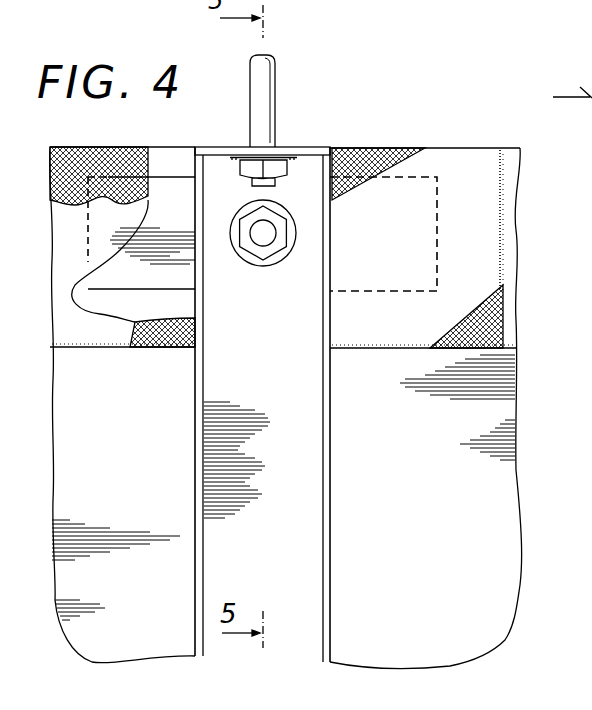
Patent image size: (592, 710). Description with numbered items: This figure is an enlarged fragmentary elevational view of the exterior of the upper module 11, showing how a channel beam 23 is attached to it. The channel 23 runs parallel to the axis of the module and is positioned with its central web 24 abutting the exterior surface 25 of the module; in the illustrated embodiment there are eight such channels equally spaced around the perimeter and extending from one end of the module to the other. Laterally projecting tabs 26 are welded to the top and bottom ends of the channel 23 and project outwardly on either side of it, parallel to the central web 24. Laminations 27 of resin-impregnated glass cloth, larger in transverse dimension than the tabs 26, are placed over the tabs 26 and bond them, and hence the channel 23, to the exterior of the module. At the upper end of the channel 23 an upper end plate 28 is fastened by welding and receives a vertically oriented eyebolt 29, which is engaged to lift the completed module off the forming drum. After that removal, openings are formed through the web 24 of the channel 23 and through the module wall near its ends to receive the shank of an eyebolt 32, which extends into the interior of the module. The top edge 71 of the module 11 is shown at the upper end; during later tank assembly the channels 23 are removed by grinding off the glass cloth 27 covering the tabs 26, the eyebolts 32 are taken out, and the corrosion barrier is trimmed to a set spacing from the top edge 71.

The upper module 11 is at (534, 432).
The channel beam 23 is at (340, 574).
The central web 24 is at (305, 527).
The exterior surface 25 is at (438, 470).
The laterally projecting tab 26 is at (166, 183).
The lamination 27 is at (497, 243).
The upper end plate 28 is at (310, 147).
The eyebolt 29 is at (270, 90).
The eyebolt 32 is at (264, 238).
The top edge 71 is at (486, 148).